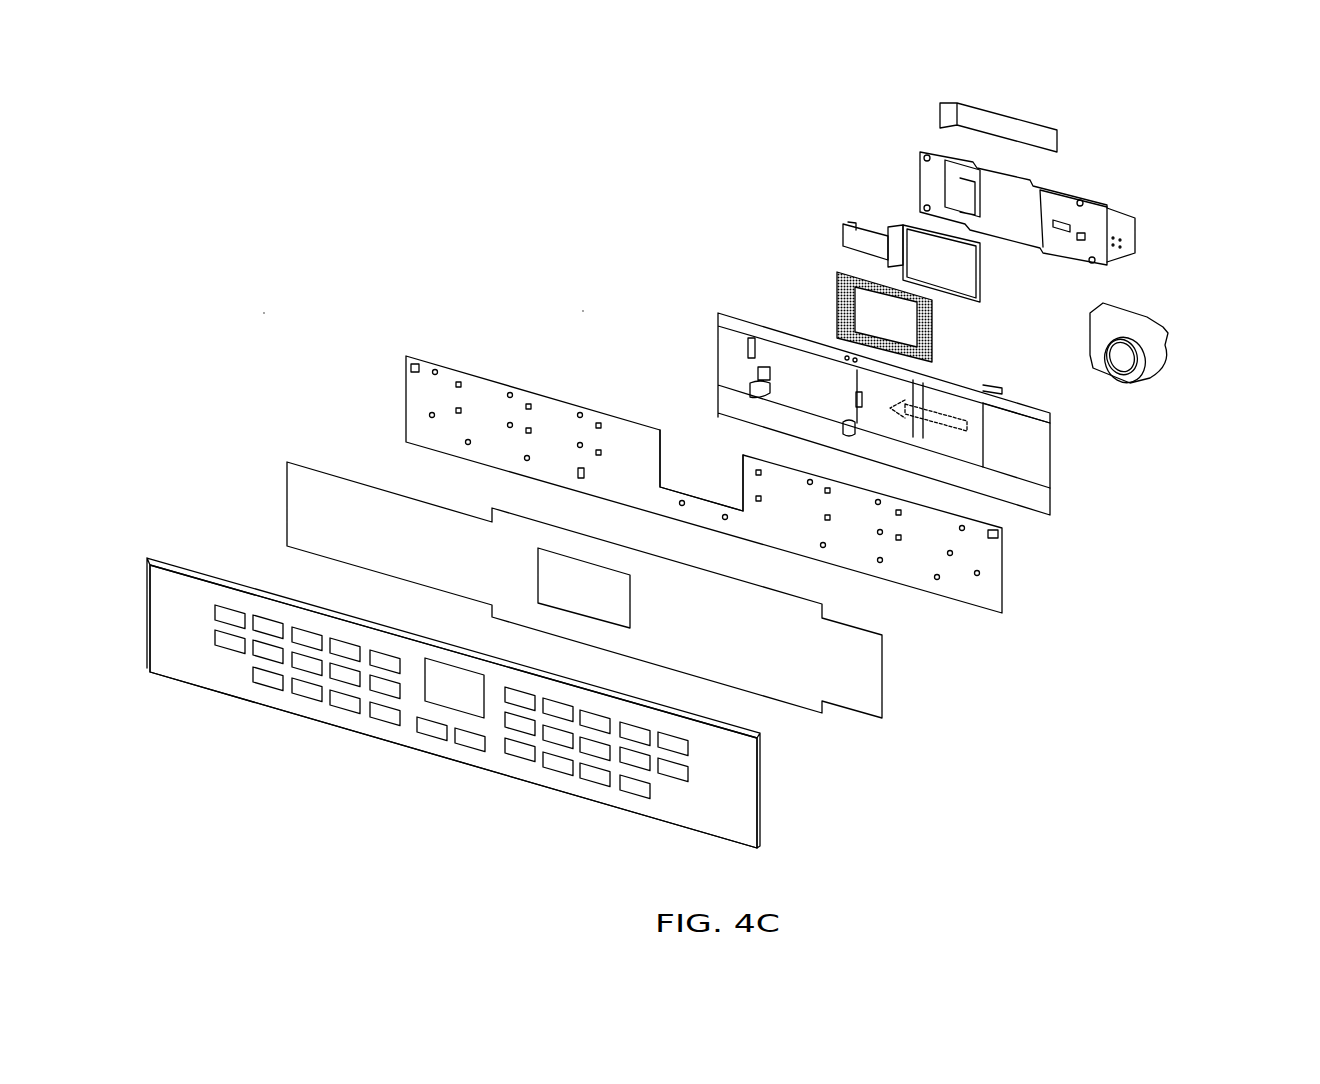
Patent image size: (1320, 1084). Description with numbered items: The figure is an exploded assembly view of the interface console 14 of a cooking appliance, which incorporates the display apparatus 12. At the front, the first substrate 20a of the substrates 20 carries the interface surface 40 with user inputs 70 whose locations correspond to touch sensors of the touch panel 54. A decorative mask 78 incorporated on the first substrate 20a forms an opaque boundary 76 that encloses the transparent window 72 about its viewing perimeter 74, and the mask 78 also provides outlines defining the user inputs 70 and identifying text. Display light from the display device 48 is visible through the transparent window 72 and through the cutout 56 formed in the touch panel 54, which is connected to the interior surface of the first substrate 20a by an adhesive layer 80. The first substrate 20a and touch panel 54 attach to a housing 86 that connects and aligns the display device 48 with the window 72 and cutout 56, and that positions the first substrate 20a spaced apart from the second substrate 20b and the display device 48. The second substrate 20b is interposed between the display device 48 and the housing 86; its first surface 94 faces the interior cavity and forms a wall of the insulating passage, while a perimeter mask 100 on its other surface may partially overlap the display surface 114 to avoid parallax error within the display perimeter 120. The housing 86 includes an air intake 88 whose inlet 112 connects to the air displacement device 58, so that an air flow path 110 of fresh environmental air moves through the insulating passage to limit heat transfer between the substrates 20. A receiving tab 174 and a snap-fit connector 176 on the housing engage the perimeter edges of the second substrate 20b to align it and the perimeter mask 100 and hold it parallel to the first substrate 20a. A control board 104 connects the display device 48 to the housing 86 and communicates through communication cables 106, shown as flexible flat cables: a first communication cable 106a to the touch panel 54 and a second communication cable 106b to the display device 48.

The display apparatus 12 is at (583, 311).
The interface console 14 is at (264, 313).
The substrate 20 is at (582, 529).
The first substrate 20a is at (516, 691).
The second substrate 20b is at (852, 276).
The interface surface 40 is at (234, 678).
The display device 48 is at (1004, 263).
The touch panel 54 is at (757, 488).
The cutout 56 is at (690, 452).
The air displacement device 58 is at (1150, 370).
The user inputs 70 is at (518, 757).
The transparent window 72 is at (440, 677).
The viewing perimeter 74 is at (381, 739).
The opaque boundary 76 is at (425, 703).
The decorative mask 78 is at (240, 608).
The adhesive layer 80 is at (865, 677).
The housing 86 is at (890, 426).
The air intake 88 is at (987, 384).
The first surface 94 is at (937, 330).
The perimeter mask 100 is at (875, 301).
The control board 104 is at (1103, 208).
The communication cables 106 is at (944, 161).
The first communication cable 106a is at (1007, 118).
The second communication cable 106b is at (864, 235).
The air flow path 110 is at (938, 402).
The inlet 112 is at (983, 430).
The display surface 114 is at (960, 262).
The display perimeter 120 is at (912, 222).
The receiving tab 174 is at (853, 394).
The snap-fit connector 176 is at (752, 389).